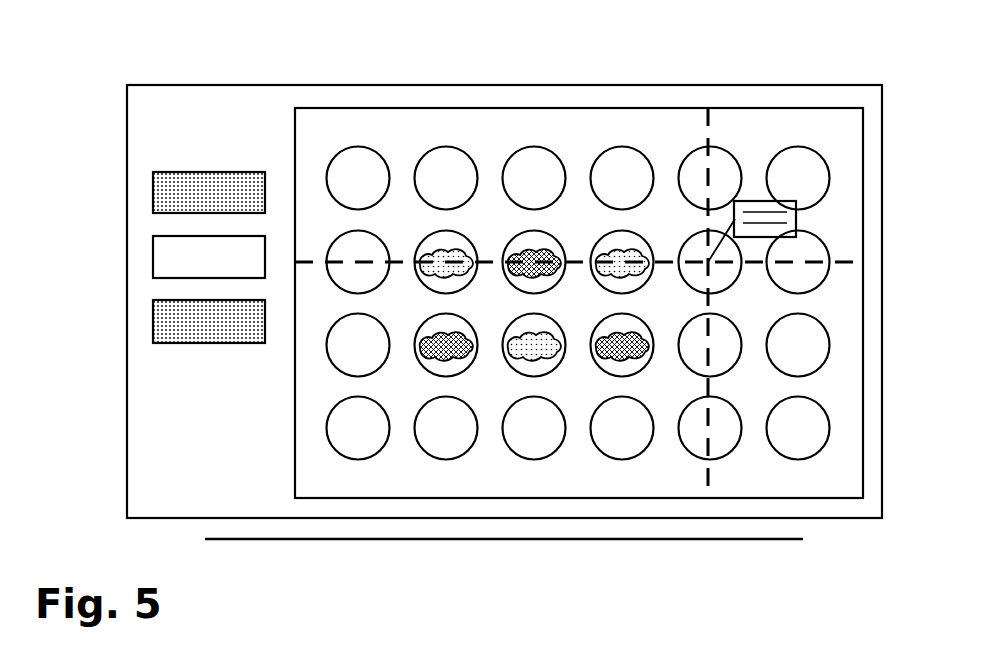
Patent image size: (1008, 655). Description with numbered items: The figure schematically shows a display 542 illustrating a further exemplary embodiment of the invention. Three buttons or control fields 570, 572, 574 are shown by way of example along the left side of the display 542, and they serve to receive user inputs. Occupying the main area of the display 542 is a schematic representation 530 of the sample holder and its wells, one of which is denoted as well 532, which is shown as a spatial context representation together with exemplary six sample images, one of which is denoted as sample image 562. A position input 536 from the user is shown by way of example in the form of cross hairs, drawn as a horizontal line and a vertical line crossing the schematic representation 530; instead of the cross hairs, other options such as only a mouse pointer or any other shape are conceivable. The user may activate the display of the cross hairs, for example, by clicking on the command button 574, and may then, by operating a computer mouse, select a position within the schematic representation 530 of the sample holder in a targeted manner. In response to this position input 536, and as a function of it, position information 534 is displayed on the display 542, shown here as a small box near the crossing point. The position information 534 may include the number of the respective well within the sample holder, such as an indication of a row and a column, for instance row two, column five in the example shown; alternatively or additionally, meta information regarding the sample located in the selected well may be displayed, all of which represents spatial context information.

The schematic representation of the sample holder 530 is at (345, 108).
The well 532 is at (367, 155).
The position information 534 is at (763, 201).
The position input 536 is at (668, 108).
The display 542 is at (843, 88).
The sample image 562 is at (445, 250).
The control field 570 is at (153, 198).
The control field 572 is at (153, 262).
The command button 574 is at (153, 325).